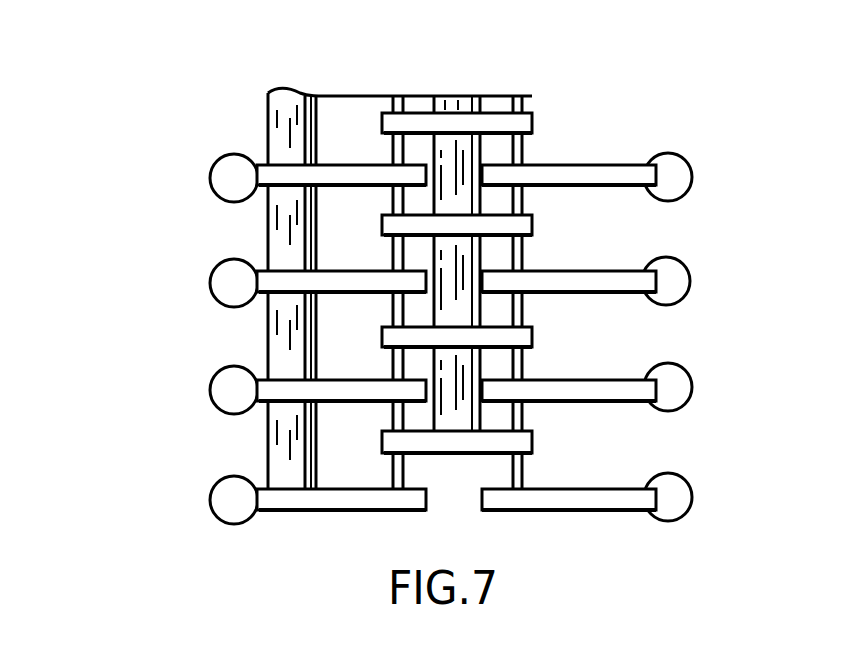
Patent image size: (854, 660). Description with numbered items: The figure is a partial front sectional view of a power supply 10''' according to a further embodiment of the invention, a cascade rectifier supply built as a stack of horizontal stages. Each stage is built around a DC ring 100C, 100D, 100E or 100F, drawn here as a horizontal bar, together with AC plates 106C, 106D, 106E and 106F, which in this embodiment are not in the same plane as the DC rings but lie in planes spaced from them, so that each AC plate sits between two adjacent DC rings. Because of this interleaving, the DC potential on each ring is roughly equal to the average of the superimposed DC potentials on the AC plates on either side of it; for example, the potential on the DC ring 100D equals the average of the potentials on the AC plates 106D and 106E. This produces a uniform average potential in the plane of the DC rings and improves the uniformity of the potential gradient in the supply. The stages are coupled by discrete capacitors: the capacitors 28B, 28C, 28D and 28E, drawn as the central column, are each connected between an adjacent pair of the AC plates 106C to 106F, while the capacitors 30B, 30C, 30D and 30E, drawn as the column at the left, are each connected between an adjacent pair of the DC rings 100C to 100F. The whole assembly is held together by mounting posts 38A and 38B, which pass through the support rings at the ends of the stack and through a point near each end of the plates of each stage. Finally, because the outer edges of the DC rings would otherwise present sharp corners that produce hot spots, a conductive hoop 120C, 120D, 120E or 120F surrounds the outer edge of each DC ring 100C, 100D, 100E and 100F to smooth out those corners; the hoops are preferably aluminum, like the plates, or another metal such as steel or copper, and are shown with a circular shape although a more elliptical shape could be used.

The power supply 10''' is at (110, 340).
The capacitor 28B is at (458, 100).
The capacitor 28C is at (480, 200).
The capacitor 28D is at (480, 300).
The capacitor 28E is at (480, 408).
The capacitor 30B is at (280, 118).
The capacitor 30C is at (268, 236).
The capacitor 30D is at (268, 337).
The capacitor 30E is at (268, 447).
The mounting post 38A is at (407, 102).
The mounting post 38B is at (522, 103).
The AC plate 106C is at (531, 123).
The AC plate 106D is at (532, 229).
The AC plate 106E is at (532, 336).
The AC plate 106F is at (532, 446).
The DC ring 100C is at (612, 167).
The DC ring 100D is at (627, 270).
The DC ring 100E is at (632, 378).
The DC ring 100F is at (632, 488).
The hoop 120C is at (215, 170).
The hoop 120D is at (212, 283).
The hoop 120E is at (218, 395).
The hoop 120F is at (217, 500).